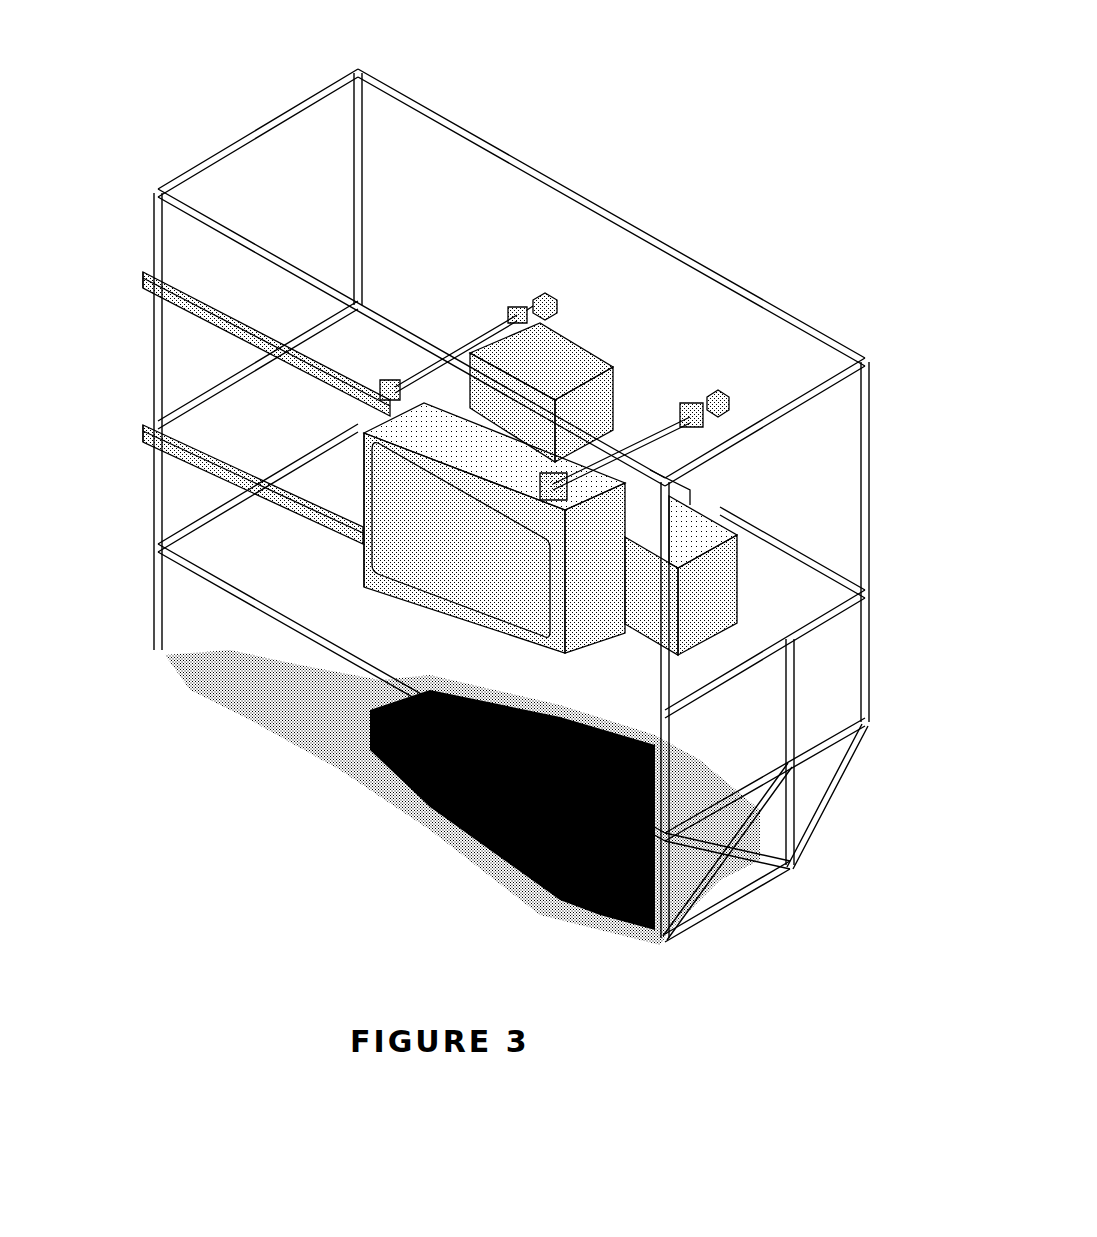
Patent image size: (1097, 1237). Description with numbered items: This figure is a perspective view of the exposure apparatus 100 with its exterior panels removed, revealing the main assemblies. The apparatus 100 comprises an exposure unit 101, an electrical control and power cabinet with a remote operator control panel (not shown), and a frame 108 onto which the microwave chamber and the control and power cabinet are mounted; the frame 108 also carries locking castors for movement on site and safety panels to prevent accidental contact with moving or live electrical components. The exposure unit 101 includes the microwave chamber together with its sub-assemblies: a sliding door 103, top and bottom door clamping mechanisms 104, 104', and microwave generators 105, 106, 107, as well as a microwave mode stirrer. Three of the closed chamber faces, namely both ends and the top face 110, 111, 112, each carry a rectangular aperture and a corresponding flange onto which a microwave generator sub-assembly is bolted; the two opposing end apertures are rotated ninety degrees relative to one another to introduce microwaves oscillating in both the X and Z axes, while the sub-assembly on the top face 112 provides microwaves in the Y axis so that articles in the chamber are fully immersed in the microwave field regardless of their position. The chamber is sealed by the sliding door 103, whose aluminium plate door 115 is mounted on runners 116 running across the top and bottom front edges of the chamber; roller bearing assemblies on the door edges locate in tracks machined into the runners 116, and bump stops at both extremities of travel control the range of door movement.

The apparatus 100 is at (612, 116).
The exposure unit 101 is at (637, 370).
The sliding door 103 is at (395, 530).
The door clamping mechanism 104 is at (218, 399).
The door clamping mechanism 104' is at (462, 797).
The microwave generator 105 is at (403, 368).
The microwave generator 106 is at (555, 358).
The microwave generator 107 is at (718, 565).
The frame 108 is at (242, 148).
The closed chamber face 110 is at (466, 328).
The closed chamber face 111 is at (636, 424).
The top face 112 is at (698, 484).
The aluminium plate door 115 is at (372, 553).
The runners 116 is at (232, 327).